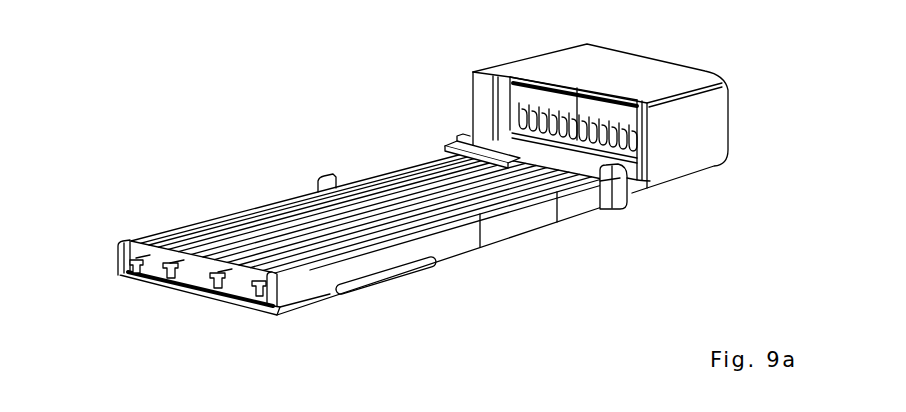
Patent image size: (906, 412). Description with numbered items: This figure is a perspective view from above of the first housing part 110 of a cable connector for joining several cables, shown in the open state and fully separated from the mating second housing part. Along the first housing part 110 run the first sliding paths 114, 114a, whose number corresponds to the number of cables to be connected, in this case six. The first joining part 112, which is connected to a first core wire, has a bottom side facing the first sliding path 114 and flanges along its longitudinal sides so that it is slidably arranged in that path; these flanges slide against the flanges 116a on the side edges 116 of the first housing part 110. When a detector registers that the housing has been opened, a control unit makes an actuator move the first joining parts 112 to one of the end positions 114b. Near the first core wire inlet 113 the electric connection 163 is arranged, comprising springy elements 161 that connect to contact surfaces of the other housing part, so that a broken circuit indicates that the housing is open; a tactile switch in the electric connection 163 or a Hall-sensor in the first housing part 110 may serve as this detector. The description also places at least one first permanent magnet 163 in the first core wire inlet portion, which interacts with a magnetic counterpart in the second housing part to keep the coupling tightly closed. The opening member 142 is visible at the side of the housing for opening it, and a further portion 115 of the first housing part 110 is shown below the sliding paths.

The first housing part 110 is at (607, 70).
The first joining part 112 is at (403, 232).
The first core wire inlet 113 is at (632, 173).
The first sliding path 114 is at (352, 238).
The rail groove 114a is at (413, 166).
The end positions 114b is at (123, 275).
The bottom plate 115 is at (247, 312).
The side edges 116 is at (218, 292).
The flanges 116a is at (218, 272).
The opening member 142 is at (447, 154).
The springy elements 161 is at (628, 126).
The electric connection 163 is at (518, 128).